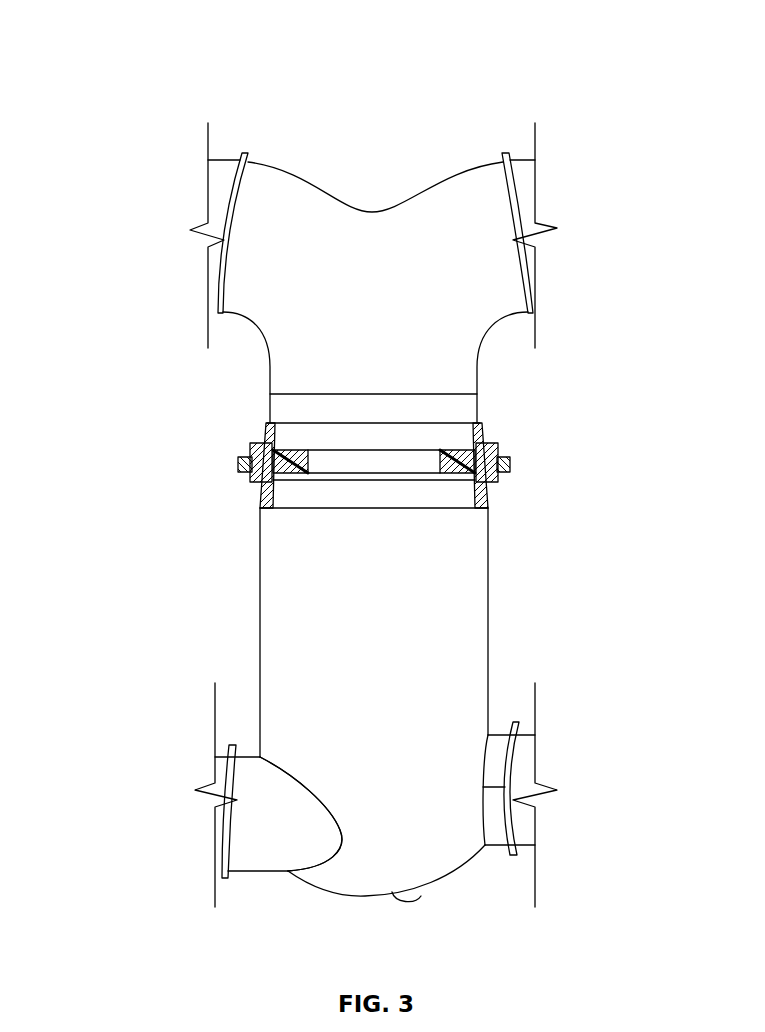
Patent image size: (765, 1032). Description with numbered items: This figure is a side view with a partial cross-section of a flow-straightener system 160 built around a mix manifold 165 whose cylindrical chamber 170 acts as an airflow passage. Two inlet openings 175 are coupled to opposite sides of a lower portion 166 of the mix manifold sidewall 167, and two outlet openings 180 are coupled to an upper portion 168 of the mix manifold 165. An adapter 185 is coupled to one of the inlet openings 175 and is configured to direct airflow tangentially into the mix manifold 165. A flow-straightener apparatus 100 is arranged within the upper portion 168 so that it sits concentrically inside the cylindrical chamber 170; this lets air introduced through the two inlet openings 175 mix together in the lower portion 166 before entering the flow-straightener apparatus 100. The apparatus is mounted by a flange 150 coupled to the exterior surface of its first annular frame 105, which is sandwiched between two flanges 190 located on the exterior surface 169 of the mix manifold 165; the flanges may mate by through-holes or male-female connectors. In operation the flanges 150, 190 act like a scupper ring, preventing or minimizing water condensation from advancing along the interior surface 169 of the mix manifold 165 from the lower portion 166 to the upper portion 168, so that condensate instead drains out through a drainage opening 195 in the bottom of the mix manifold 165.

The flow-straightener system 160 is at (133, 67).
The outlet openings 180 is at (217, 270).
The upper portion 168 is at (323, 344).
The flow-straightener apparatus 100 is at (219, 482).
The cylindrical chamber 170 is at (283, 753).
The first annular frame 105 is at (453, 452).
The flange 150 is at (240, 460).
The flange 190 is at (498, 446).
The exterior surface 169 is at (259, 684).
The adapter 185 is at (253, 843).
The inlet openings 175 is at (333, 820).
The mix manifold 165 is at (302, 739).
The mix manifold sidewall 167 is at (178, 749).
The lower portion 166 is at (445, 857).
The drainage opening 195 is at (420, 897).